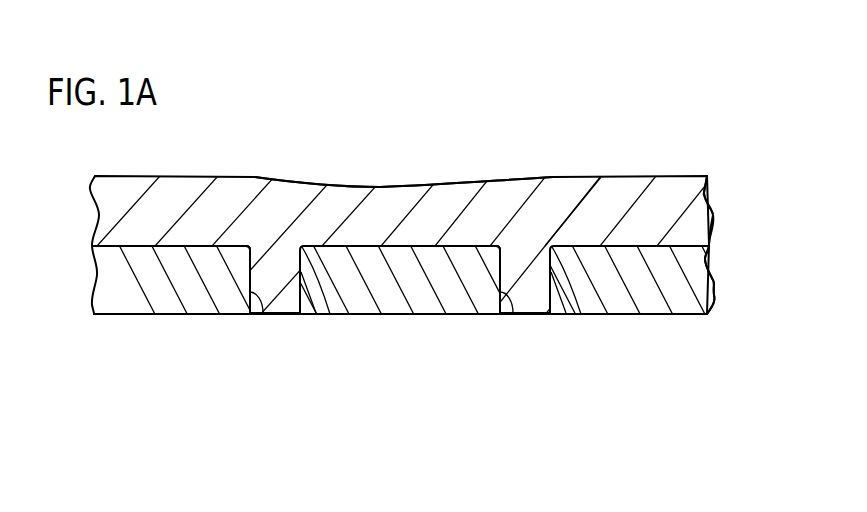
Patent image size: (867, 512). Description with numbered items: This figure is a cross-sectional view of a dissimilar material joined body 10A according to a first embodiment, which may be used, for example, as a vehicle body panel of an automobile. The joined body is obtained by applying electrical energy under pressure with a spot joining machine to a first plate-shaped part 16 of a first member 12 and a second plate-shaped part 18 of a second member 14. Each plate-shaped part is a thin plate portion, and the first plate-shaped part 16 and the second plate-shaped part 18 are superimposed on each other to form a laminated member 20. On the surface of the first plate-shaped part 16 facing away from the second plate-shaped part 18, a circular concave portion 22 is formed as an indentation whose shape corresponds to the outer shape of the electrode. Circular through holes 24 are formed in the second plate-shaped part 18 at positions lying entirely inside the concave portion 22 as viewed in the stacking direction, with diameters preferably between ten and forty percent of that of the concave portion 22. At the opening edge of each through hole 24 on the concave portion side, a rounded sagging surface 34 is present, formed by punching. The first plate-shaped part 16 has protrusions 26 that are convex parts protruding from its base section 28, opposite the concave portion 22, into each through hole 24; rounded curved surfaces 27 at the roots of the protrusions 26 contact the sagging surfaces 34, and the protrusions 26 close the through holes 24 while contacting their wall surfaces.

The dissimilar material joined body 10A is at (668, 116).
The first member 12 is at (83, 193).
The second member 14 is at (83, 277).
The first plate-shaped part 16 is at (702, 210).
The second plate-shaped part 18 is at (702, 280).
The laminated member 20 is at (750, 199).
The concave portion 22 is at (347, 186).
The through hole 24 is at (262, 313).
The protrusion 26 is at (284, 280).
The rounded curved surface 27 is at (322, 308).
The base section 28 is at (576, 192).
The sagging surface 34 is at (252, 245).